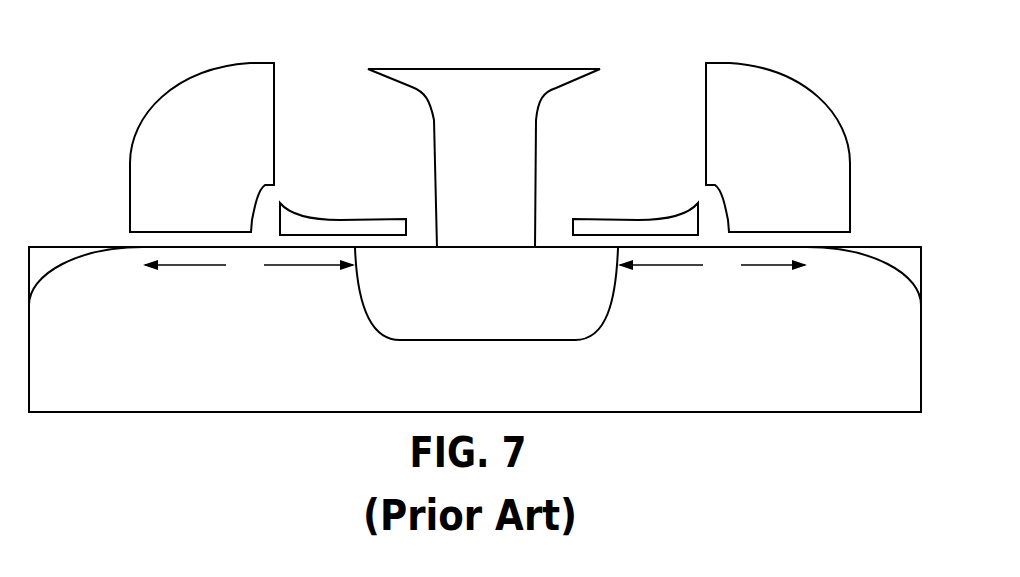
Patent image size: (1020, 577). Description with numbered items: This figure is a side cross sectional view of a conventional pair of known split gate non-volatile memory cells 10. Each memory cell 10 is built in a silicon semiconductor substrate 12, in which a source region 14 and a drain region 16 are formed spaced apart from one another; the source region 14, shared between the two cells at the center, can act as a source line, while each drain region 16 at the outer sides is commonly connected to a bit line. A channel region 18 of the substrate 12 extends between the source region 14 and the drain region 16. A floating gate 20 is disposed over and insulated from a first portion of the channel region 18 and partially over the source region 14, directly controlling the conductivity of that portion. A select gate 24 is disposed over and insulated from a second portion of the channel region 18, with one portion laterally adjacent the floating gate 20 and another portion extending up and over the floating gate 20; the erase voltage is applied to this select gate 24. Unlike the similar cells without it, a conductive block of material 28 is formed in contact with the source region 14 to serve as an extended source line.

The split gate non-volatile memory cell 10 is at (124, 80).
The silicon semiconductor substrate 12 is at (46, 397).
The source region 14 is at (473, 309).
The drain region 16 is at (53, 284).
The channel region 18 is at (231, 279).
The floating gate 20 is at (342, 216).
The select gate 24 is at (186, 174).
The conductive block of material 28 is at (470, 164).